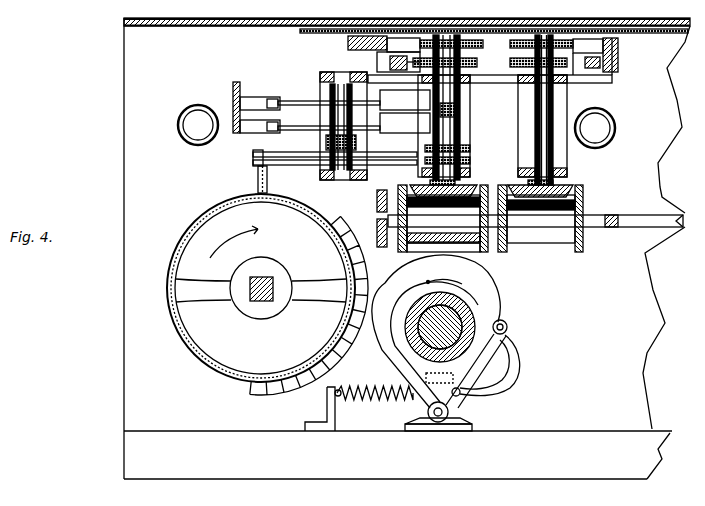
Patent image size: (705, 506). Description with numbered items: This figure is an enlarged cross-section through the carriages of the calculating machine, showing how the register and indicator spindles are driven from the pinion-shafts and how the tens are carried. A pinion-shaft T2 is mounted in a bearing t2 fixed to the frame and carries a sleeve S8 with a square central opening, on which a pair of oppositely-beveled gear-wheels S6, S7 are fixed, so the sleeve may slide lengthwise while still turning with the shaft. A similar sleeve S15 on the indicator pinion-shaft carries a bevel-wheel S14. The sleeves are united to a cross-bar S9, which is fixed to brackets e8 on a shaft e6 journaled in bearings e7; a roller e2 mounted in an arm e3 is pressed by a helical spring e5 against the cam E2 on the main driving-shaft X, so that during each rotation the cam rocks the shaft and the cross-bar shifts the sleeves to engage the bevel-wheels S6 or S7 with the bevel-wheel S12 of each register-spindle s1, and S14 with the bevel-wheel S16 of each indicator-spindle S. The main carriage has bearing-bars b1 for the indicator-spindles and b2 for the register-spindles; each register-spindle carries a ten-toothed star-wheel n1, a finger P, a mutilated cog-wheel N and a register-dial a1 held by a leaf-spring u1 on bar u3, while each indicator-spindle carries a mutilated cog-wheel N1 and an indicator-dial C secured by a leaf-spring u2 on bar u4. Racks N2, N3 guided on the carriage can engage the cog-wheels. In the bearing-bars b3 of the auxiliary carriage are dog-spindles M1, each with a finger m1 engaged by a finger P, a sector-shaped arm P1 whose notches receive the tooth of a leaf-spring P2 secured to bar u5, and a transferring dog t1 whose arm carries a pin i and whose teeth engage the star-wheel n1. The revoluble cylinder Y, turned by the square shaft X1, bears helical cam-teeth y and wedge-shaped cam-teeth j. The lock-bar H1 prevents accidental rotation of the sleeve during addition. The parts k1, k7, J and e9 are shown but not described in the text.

The casing top wall k1 is at (174, 28).
The casing inner plate k7 is at (302, 31).
The bar u3 is at (348, 44).
The leaf-spring u1 is at (435, 45).
The register-dial a1 is at (470, 48).
The leaf-spring u2 is at (588, 45).
The bar u4 is at (618, 50).
The rack N3 is at (601, 64).
The mutilated cog-wheel N1 is at (608, 80).
The indicator-dial C is at (576, 57).
The indicator-spindle S is at (540, 118).
The guide roller J is at (180, 132).
The rack N2 is at (340, 72).
The bearing-bar b3 is at (322, 76).
The dog-spindle M1 is at (356, 140).
The mutilated cog-wheel N is at (462, 100).
The bearing-bar b2 is at (457, 84).
The register-spindle s1 is at (456, 112).
The star-wheel n1 is at (462, 149).
The bearing-bar b1 is at (562, 84).
The bar u5 is at (233, 96).
The leaf-spring P2 is at (262, 97).
The arm P1 is at (266, 124).
The finger m1 is at (329, 108).
The finger P is at (405, 111).
The transferring dog t1 is at (300, 165).
The pin i is at (258, 176).
The bearing t2 is at (377, 214).
The bevel gear-wheel S7 is at (395, 218).
The cross-bar S9 is at (470, 255).
The bevel gear-wheel S6 is at (492, 252).
The bevel-wheel S12 is at (420, 190).
The bevel-wheel S16 is at (580, 192).
The bevel-wheel S14 is at (545, 231).
The sleeve S15 is at (620, 220).
The pinion-shaft T2 is at (644, 239).
The sleeve S8 is at (449, 274).
The revoluble cylinder Y is at (200, 362).
The cam-teeth j is at (312, 199).
The square shaft X1 is at (262, 302).
The cam-teeth y is at (268, 397).
The bracket e8 is at (381, 352).
The main driving-shaft X is at (524, 370).
The cam E2 is at (476, 316).
The roller e2 is at (508, 327).
The arm e3 is at (518, 362).
The lock-bar H1 is at (450, 385).
The shaft e6 is at (450, 412).
The bearing e7 is at (452, 432).
The helical spring e5 is at (375, 404).
The bracket e9 is at (327, 405).